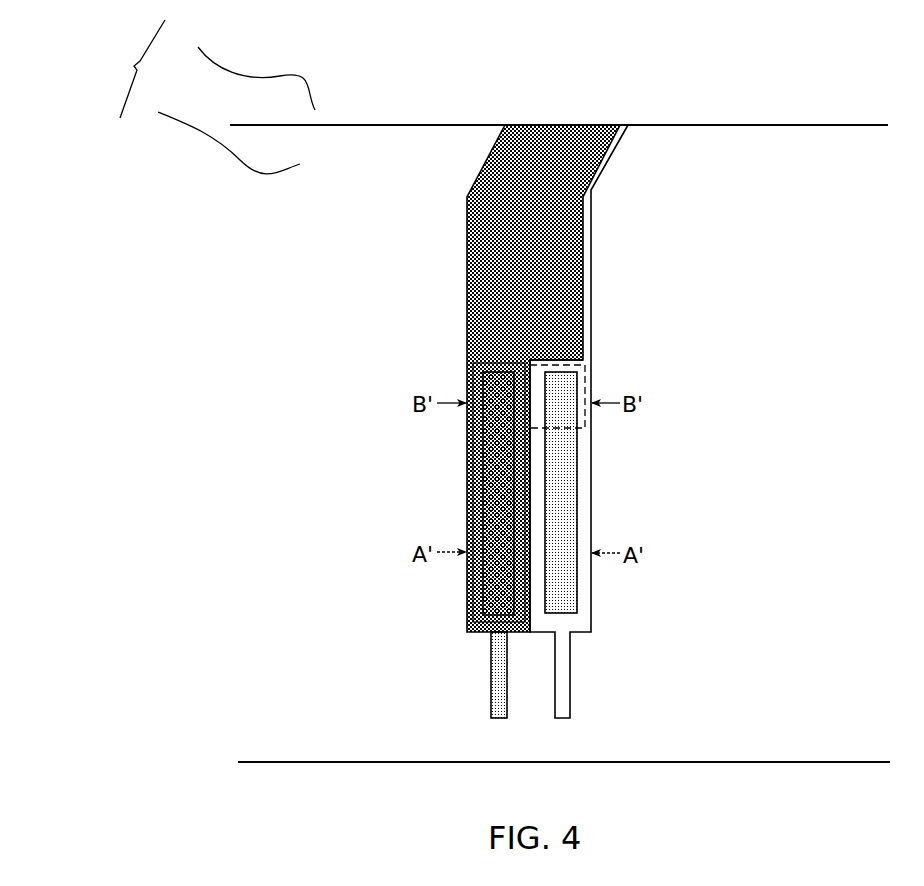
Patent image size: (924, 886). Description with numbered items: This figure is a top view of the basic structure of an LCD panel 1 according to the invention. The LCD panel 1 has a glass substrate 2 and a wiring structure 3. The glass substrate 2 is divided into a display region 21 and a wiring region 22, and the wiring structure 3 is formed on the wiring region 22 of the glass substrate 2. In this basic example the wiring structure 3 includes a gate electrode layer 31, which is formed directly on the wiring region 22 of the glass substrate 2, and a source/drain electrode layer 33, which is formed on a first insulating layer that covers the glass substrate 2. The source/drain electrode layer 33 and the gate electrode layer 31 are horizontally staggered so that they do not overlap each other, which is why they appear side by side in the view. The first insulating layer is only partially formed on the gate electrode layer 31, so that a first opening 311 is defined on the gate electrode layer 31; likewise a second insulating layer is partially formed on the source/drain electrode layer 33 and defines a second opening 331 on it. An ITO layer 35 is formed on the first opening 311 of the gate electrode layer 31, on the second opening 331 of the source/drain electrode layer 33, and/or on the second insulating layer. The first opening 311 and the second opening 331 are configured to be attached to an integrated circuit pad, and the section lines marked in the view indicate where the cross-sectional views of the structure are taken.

The LCD panel 1 is at (722, 112).
The glass substrate 2 is at (141, 69).
The display region 21 is at (247, 68).
The wiring region 22 is at (217, 136).
The wiring structure 3 is at (474, 166).
The gate electrode layer 31 is at (566, 688).
The first opening 311 is at (565, 598).
The source/drain electrode layer 33 is at (493, 688).
The second opening 331 is at (497, 465).
The ITO layer 35 is at (468, 578).